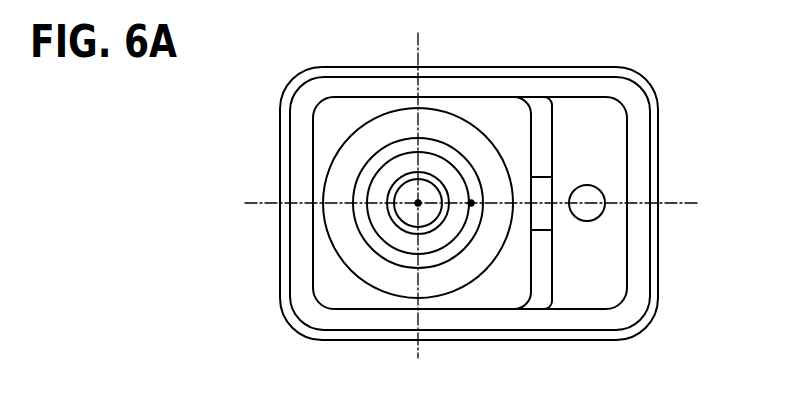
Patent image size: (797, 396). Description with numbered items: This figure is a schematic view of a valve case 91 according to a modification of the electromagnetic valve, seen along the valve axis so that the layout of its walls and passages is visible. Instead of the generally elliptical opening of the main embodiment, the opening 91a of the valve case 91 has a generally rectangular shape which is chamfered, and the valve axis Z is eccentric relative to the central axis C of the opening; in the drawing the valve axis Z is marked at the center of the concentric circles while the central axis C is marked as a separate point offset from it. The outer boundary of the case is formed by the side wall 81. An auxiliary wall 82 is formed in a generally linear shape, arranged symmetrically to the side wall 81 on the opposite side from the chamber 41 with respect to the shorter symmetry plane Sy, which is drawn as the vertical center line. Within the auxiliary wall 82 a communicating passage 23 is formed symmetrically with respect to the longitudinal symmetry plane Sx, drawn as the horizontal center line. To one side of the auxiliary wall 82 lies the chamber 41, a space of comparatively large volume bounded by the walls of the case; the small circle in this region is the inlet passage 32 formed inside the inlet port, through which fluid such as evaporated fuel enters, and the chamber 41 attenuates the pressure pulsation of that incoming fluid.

The valve case 91 is at (282, 75).
The opening 91a is at (360, 102).
The side wall 81 is at (297, 145).
The auxiliary wall 82 is at (536, 131).
The communicating passage 23 is at (538, 178).
The inlet passage 32 is at (588, 197).
The chamber 41 is at (585, 280).
The valve axis Z is at (418, 206).
The central axis of the opening C is at (471, 206).
The longitudinal symmetry plane Sx is at (700, 205).
The shorter symmetry plane Sy is at (418, 36).